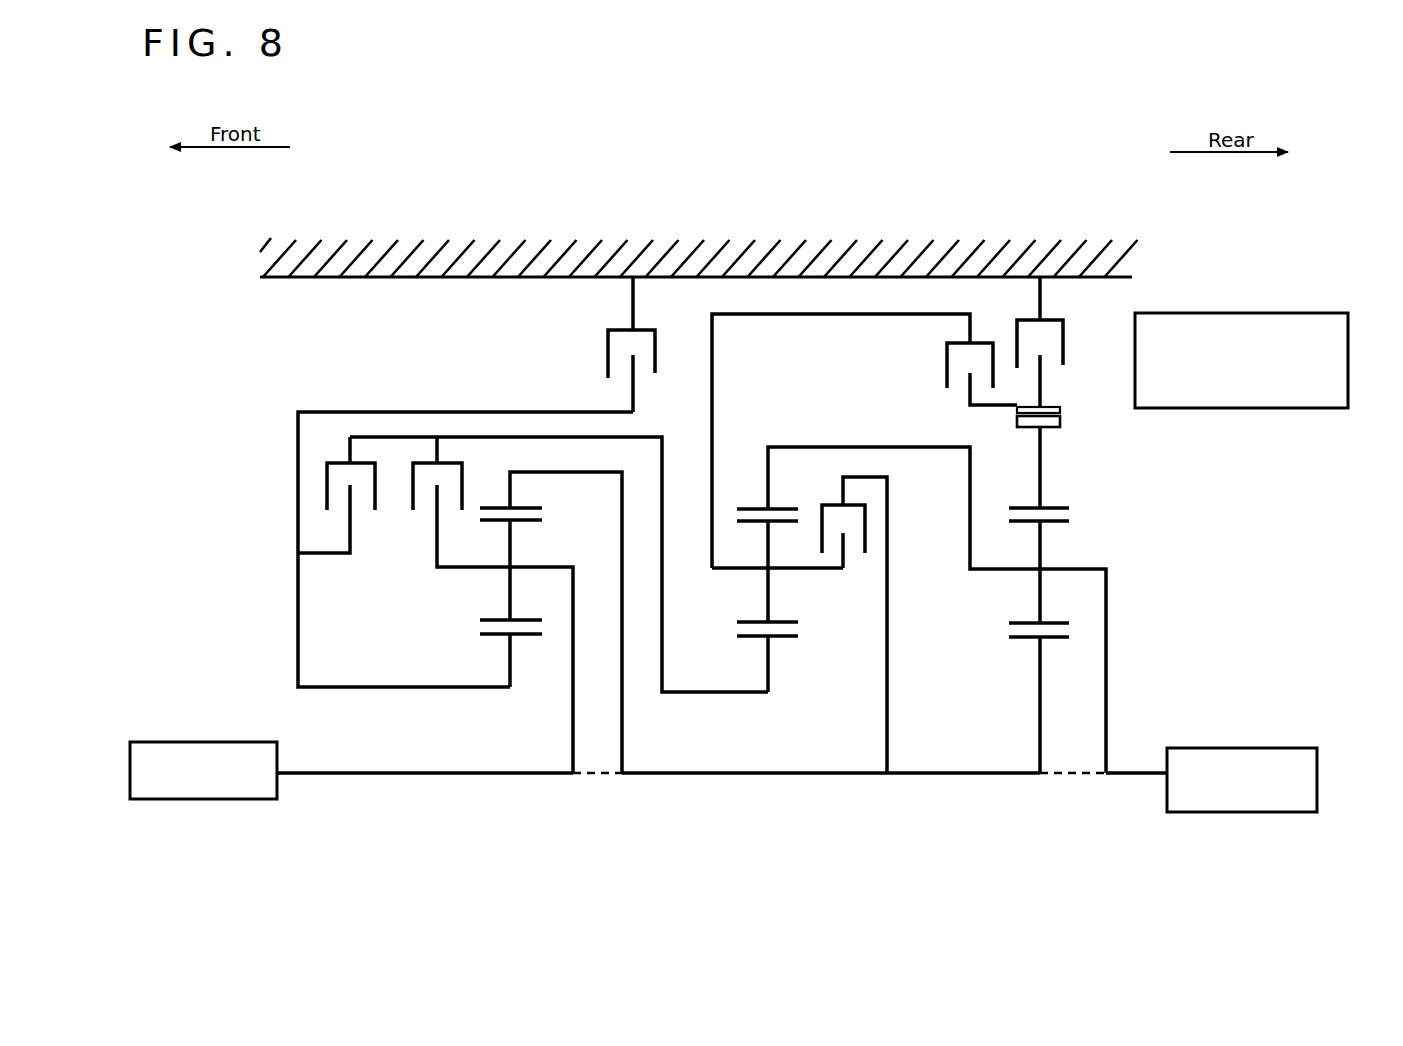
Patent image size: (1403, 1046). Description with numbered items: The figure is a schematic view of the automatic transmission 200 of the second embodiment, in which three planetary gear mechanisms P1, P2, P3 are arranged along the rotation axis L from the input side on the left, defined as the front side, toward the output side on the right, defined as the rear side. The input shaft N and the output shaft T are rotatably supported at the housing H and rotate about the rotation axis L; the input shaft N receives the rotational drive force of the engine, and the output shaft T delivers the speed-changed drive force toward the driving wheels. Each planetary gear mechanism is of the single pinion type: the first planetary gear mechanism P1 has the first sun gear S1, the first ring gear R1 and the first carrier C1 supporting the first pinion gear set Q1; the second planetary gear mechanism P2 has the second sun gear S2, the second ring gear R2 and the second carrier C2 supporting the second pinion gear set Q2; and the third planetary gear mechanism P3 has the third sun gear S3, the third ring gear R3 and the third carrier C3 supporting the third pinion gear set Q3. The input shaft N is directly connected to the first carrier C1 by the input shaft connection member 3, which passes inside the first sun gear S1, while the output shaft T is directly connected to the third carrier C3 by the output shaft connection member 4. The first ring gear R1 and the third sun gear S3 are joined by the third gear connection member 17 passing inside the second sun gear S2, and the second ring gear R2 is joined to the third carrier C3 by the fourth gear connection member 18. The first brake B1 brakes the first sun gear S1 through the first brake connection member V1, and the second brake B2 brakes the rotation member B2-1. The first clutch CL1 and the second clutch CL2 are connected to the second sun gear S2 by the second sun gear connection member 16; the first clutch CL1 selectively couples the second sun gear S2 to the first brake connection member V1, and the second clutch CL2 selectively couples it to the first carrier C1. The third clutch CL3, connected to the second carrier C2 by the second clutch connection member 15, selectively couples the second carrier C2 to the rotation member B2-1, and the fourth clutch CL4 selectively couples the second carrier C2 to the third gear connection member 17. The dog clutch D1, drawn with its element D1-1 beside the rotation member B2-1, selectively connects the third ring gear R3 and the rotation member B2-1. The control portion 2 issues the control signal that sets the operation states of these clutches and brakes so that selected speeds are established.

The automatic transmission 200 is at (963, 212).
The housing H is at (713, 250).
The control portion 2 is at (1255, 313).
The input shaft connection member 3 is at (425, 775).
The output shaft connection member 4 is at (1128, 777).
The second clutch connection member 15 is at (832, 315).
The second sun gear connection member 16 is at (637, 437).
The third gear connection member 17 is at (822, 777).
The fourth gear connection member 18 is at (823, 447).
The first brake B1 is at (590, 348).
The second brake B2 is at (1074, 360).
The rotation member B2-1 is at (1059, 411).
The dog clutch D1 is at (1008, 417).
The dog clutch engagement element D1-1 is at (1062, 427).
The first clutch CL1 is at (365, 517).
The second clutch CL2 is at (413, 517).
The third clutch CL3 is at (958, 396).
The fourth clutch CL4 is at (856, 578).
The first ring gear R1 is at (493, 507).
The second ring gear R2 is at (745, 508).
The third ring gear R3 is at (1016, 508).
The first carrier C1 is at (547, 567).
The second carrier C2 is at (790, 567).
The third carrier C3 is at (1087, 569).
The first pinion gear set Q1 is at (509, 598).
The second pinion gear set Q2 is at (766, 599).
The third pinion gear set Q3 is at (1038, 601).
The first sun gear S1 is at (509, 663).
The second sun gear S2 is at (766, 663).
The third sun gear S3 is at (1038, 663).
The first planetary gear mechanism P1 is at (533, 672).
The second planetary gear mechanism P2 is at (790, 670).
The third planetary gear mechanism P3 is at (1065, 670).
The first brake connection member V1 is at (382, 690).
The input shaft N is at (197, 800).
The output shaft T is at (1245, 812).
The rotation axis L is at (595, 775).